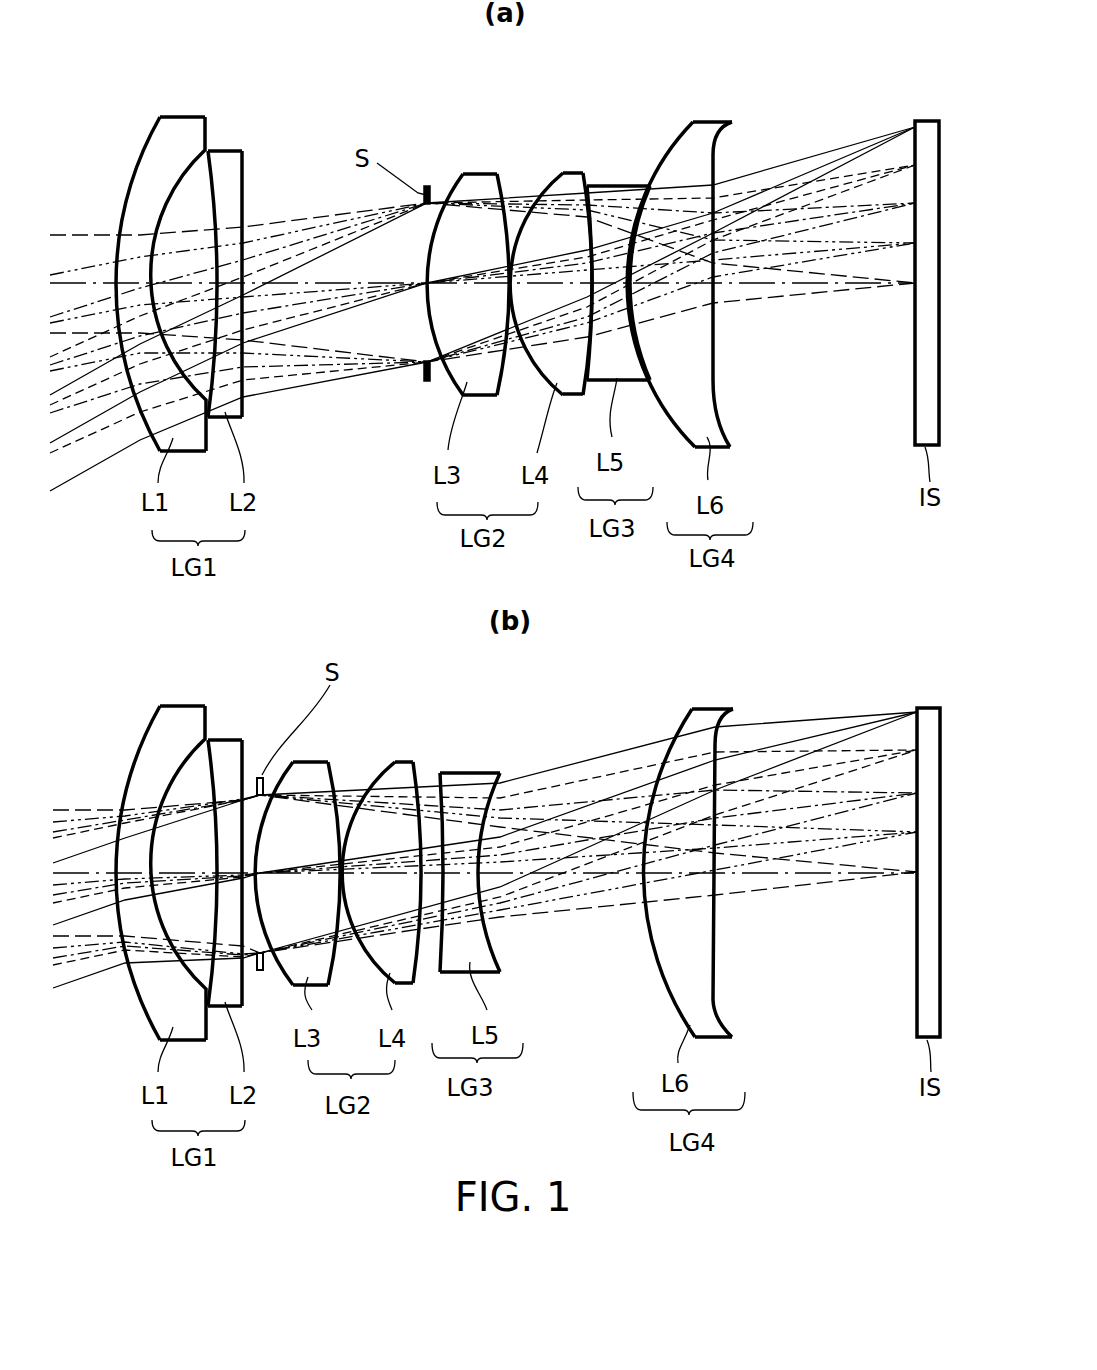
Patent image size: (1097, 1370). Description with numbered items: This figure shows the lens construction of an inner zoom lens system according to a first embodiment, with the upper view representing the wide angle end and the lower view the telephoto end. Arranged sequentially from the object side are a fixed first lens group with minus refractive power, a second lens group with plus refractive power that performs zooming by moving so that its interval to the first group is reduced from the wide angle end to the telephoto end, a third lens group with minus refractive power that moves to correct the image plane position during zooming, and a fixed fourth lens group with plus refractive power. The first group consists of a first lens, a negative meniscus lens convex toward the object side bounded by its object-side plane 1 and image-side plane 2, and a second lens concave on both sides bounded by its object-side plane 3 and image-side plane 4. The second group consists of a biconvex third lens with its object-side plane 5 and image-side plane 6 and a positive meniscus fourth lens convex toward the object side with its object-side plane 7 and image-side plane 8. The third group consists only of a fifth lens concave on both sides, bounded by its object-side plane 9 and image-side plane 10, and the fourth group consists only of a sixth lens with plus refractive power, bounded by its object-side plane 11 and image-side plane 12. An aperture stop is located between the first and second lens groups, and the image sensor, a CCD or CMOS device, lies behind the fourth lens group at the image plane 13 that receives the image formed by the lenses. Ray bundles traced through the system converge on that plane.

The object-side plane of first lens 1 is at (150, 136).
The image-side plane of first lens 2 is at (206, 124).
The object-side plane of second lens 3 is at (208, 156).
The image-side plane of second lens 4 is at (245, 178).
The object-side plane of third lens 5 is at (458, 183).
The image-side plane of third lens 6 is at (503, 176).
The object-side plane of fourth lens 7 is at (555, 180).
The image-side plane of fourth lens 8 is at (587, 178).
The object-side plane of fifth lens 9 is at (587, 206).
The image-side plane of fifth lens 10 is at (655, 215).
The object-side plane of sixth lens 11 is at (676, 134).
The image-side plane of sixth lens 12 is at (722, 145).
The image plane 13 is at (903, 147).